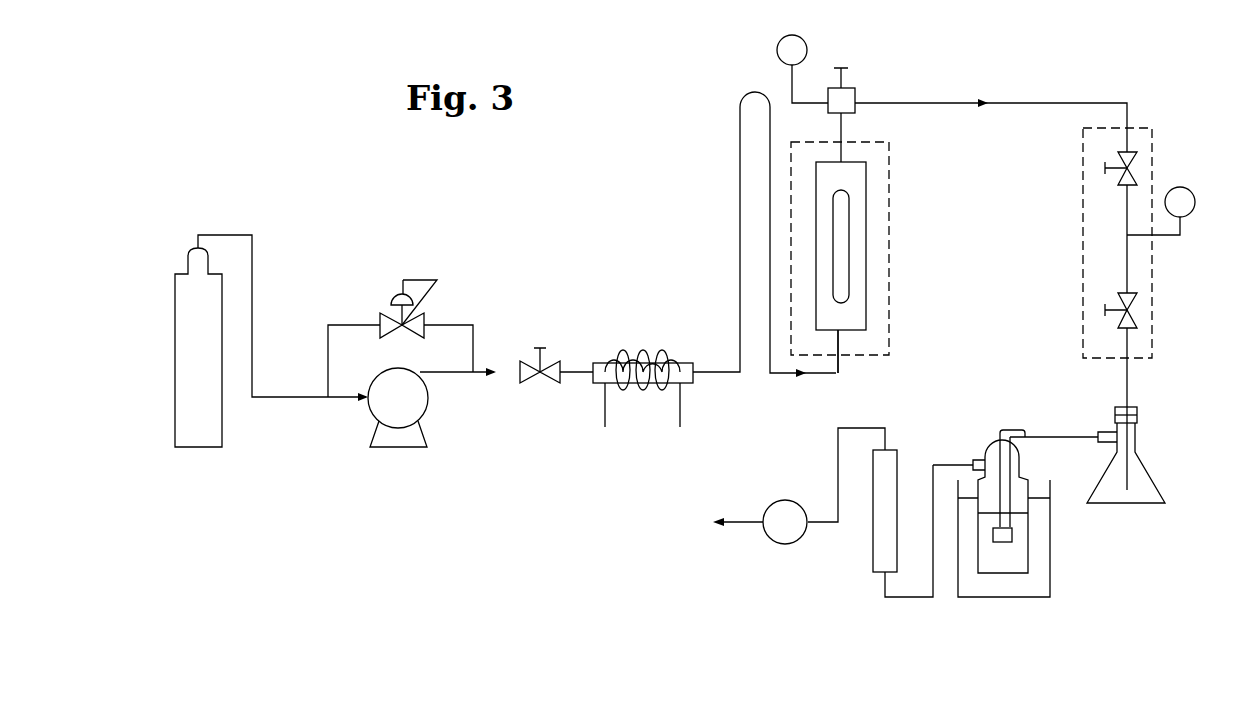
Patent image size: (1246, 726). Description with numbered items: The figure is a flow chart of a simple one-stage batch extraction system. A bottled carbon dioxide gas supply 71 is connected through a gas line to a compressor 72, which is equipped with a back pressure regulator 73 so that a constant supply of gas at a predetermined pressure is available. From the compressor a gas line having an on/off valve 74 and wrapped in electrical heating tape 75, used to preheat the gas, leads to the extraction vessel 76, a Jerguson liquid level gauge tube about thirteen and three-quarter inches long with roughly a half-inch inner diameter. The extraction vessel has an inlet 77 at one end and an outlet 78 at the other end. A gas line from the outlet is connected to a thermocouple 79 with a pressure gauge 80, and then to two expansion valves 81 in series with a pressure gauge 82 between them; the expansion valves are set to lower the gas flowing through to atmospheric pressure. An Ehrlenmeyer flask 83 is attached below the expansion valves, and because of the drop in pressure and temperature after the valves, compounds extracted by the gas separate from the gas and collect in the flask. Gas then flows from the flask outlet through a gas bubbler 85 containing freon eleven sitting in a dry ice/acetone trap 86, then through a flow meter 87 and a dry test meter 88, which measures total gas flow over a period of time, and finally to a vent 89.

The bottled gas supply 71 is at (184, 330).
The compressor 72 is at (385, 410).
The back pressure regulator 73 is at (398, 322).
The on/off valve 74 is at (538, 370).
The electrical heating tape 75 is at (643, 390).
The extraction vessel 76 is at (866, 268).
The inlet 77 is at (841, 331).
The outlet 78 is at (842, 160).
The thermocouple 79 is at (855, 93).
The pressure gauge 80 is at (807, 42).
The expansion valves 81 is at (1131, 166).
The pressure gauge 82 is at (1196, 198).
The Ehrlenmeyer flask 83 is at (1146, 472).
The gas bubbler 85 is at (1030, 537).
The dry ice/acetone trap 86 is at (1032, 585).
The flow meter 87 is at (877, 545).
The dry test meter 88 is at (787, 500).
The vent 89 is at (738, 523).